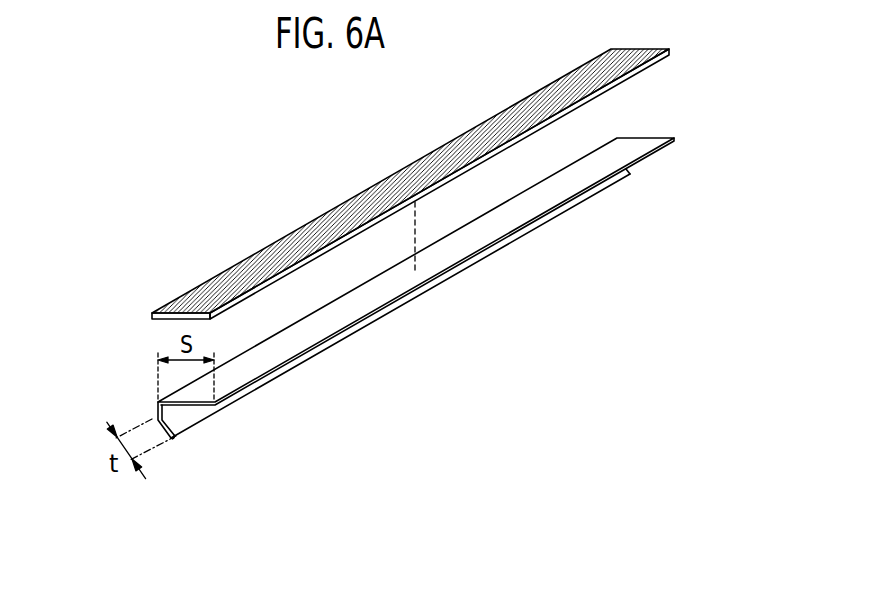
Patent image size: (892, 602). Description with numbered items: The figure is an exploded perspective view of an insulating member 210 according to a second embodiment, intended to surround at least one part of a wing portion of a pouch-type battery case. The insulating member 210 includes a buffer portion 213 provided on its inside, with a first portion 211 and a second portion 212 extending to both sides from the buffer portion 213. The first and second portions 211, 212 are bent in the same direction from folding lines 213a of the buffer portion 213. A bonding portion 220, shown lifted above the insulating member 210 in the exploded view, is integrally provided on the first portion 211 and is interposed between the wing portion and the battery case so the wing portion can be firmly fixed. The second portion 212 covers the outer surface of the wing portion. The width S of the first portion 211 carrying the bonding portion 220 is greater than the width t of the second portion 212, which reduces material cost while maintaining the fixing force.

The insulating member 210 is at (371, 323).
The first portion 211 is at (192, 401).
The second portion 212 is at (203, 415).
The buffer portion 213 is at (160, 407).
The folding lines 213a is at (175, 438).
The bonding portion 220 is at (362, 192).